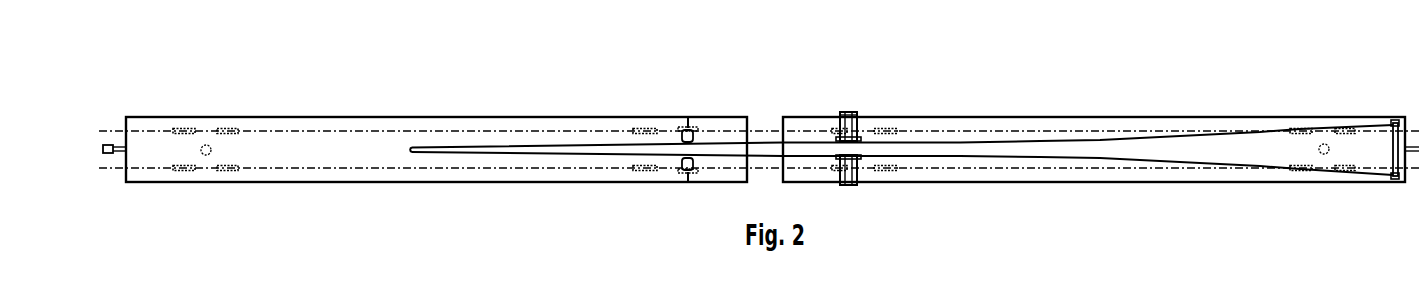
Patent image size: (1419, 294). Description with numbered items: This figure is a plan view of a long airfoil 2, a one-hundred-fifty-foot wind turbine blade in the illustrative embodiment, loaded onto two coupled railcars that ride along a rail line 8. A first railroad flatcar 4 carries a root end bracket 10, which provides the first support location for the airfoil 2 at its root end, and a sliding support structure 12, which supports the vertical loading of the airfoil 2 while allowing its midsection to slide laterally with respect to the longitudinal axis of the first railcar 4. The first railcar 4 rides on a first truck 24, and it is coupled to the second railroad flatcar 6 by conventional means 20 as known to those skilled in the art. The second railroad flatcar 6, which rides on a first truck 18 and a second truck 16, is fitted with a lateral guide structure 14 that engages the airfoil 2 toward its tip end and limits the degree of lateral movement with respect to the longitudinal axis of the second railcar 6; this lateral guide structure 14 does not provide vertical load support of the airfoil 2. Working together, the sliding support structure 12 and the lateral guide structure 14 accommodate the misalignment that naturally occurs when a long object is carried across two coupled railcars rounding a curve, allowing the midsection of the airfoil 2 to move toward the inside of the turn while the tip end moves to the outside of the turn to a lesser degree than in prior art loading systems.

The airfoil 2 is at (1137, 140).
The first railroad flatcar 4 is at (1070, 183).
The second railroad flatcar 6 is at (478, 183).
The rail line 8 is at (98, 168).
The root end bracket 10 is at (1398, 137).
The sliding support structure 12 is at (838, 122).
The lateral guide structure 14 is at (688, 177).
The second truck 16 is at (219, 128).
The first truck 18 is at (652, 128).
The conventional coupling means 20 is at (877, 126).
The first truck 24 is at (1305, 127).